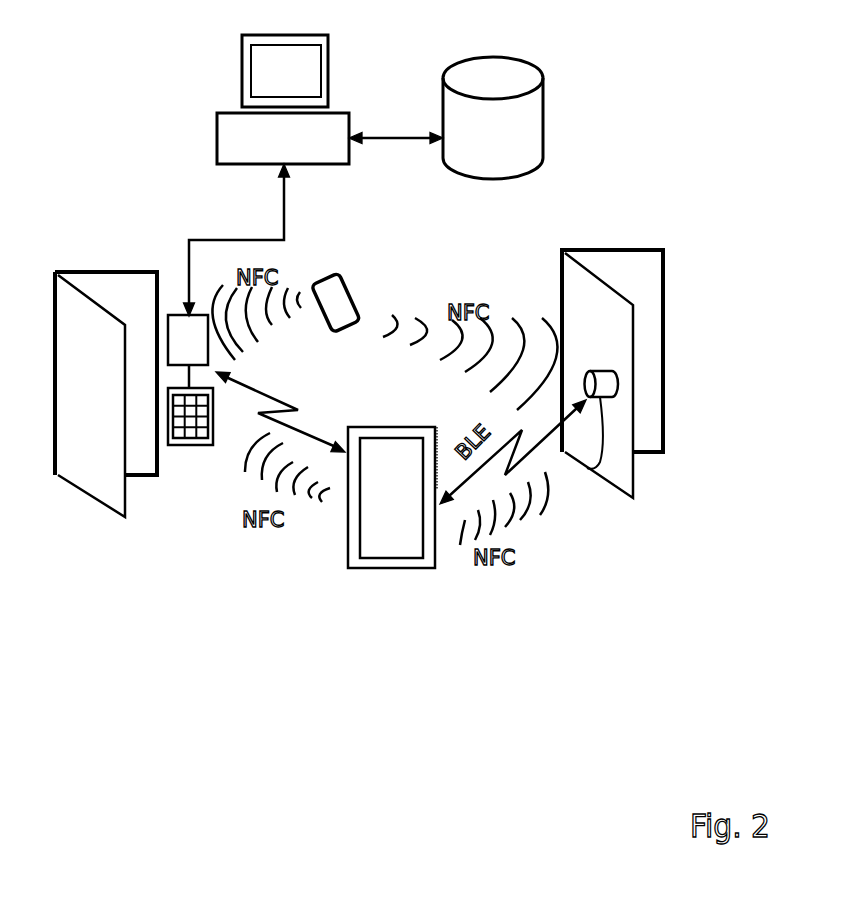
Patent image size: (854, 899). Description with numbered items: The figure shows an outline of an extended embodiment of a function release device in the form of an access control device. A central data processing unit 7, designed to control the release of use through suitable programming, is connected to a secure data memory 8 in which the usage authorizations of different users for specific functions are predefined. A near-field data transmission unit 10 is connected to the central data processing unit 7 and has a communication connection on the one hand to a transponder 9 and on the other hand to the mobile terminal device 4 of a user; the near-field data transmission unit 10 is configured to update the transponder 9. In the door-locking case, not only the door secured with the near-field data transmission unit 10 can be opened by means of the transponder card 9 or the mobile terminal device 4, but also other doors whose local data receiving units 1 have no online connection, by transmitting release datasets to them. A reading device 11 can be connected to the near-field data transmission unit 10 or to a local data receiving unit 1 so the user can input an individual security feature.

The local data receiving unit 1 is at (587, 468).
The mobile terminal device 4 is at (390, 568).
The central data processing unit 7 is at (233, 112).
The secure data memory 8 is at (543, 118).
The transponder 9 is at (358, 302).
The near-field data transmission unit 10 is at (168, 336).
The reading device 11 is at (188, 445).